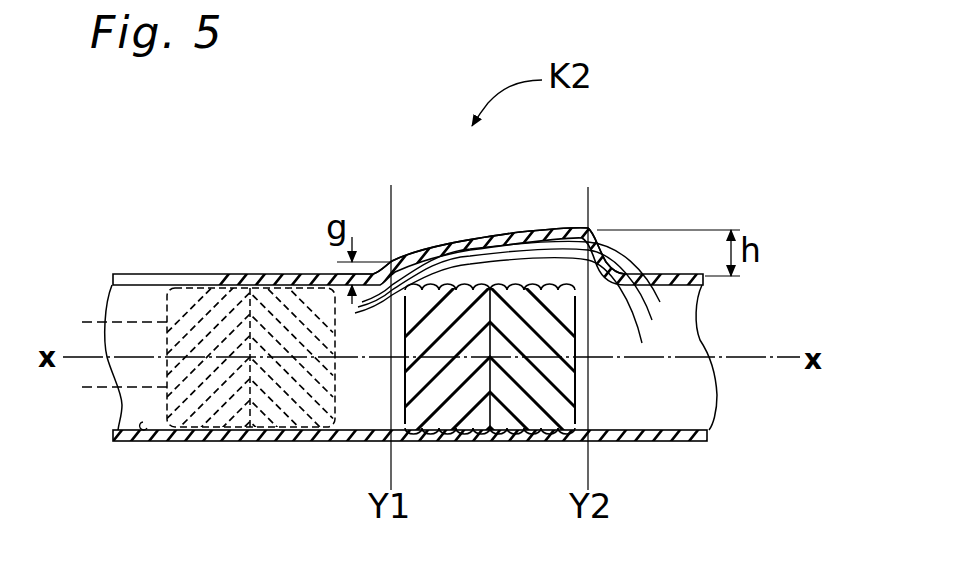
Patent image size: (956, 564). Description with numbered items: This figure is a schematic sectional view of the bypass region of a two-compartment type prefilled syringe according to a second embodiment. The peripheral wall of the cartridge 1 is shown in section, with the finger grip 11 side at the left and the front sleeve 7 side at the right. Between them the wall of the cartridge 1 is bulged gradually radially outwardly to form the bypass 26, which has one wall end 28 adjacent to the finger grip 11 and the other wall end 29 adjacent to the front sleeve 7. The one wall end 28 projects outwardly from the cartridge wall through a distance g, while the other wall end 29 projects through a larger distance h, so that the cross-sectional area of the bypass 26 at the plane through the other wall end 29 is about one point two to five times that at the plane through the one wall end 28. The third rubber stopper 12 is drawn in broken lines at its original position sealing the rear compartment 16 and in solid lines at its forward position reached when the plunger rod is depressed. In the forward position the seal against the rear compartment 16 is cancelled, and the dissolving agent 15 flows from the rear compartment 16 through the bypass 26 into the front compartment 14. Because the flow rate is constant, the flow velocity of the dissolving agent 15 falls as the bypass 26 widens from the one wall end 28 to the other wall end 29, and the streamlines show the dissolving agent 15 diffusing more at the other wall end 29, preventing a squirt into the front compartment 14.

The cartridge 1 is at (166, 273).
The front sleeve 7 is at (728, 336).
The finger grip 11 is at (96, 309).
The third rubber stopper 12 is at (227, 407).
The front compartment 14 is at (675, 404).
The dissolving agent 15 is at (447, 263).
The rear compartment 16 is at (147, 428).
The bypass 26 is at (507, 229).
The one wall end 28 is at (393, 260).
The other wall end 29 is at (592, 224).